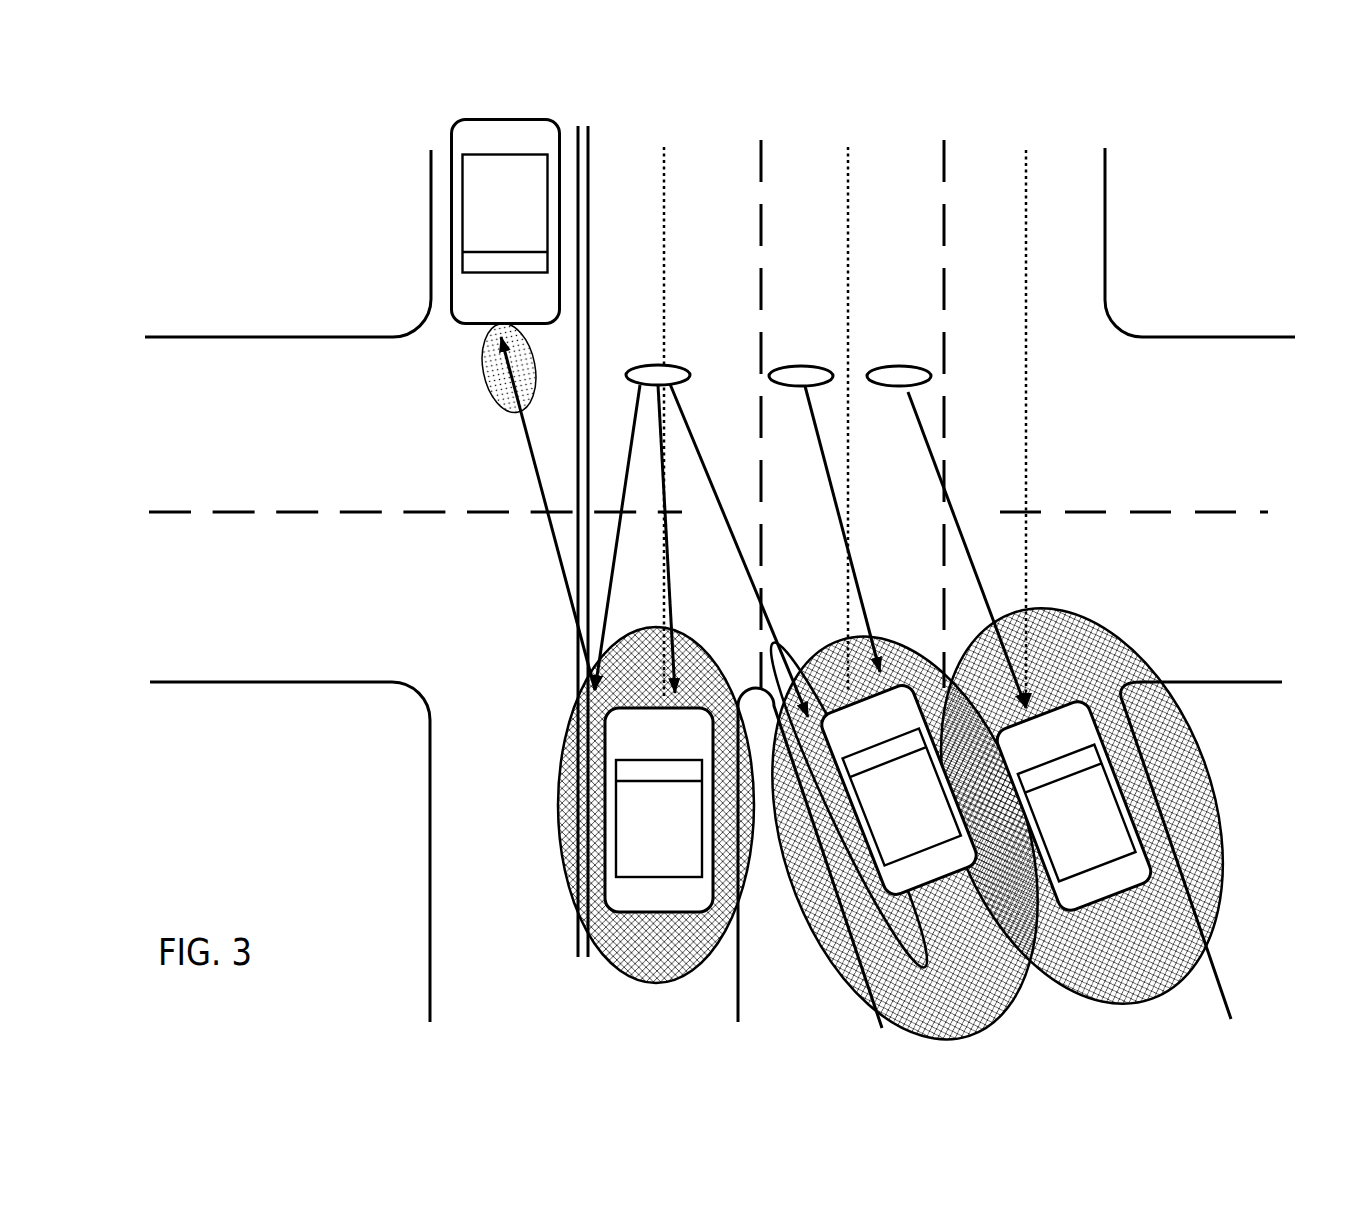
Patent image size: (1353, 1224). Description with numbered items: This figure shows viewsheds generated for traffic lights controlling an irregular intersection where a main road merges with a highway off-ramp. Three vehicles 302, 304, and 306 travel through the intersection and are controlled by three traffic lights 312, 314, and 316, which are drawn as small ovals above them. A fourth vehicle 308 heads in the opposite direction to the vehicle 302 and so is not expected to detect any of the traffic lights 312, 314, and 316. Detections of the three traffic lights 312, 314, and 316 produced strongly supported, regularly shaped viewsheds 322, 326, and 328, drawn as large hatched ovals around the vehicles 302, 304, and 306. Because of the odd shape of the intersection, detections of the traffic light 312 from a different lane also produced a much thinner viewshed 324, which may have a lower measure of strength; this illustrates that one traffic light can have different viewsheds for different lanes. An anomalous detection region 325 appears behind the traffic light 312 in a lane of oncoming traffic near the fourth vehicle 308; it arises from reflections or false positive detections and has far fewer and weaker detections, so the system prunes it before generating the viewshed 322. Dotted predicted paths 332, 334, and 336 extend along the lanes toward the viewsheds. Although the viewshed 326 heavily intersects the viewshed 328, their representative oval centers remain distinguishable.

The vehicle 302 is at (659, 810).
The vehicle 304 is at (899, 790).
The vehicle 306 is at (1073, 806).
The fourth vehicle 308 is at (506, 222).
The traffic light 312 is at (640, 366).
The traffic light 314 is at (808, 366).
The traffic light 316 is at (893, 366).
The viewshed 322 is at (567, 853).
The viewshed 324 is at (774, 650).
The anomalous detection region 325 is at (488, 375).
The viewshed 326 is at (830, 962).
The viewshed 328 is at (1122, 642).
The third predicted trajectory 332 is at (1026, 393).
The second predicted trajectory 334 is at (850, 185).
The first predicted trajectory 336 is at (666, 190).